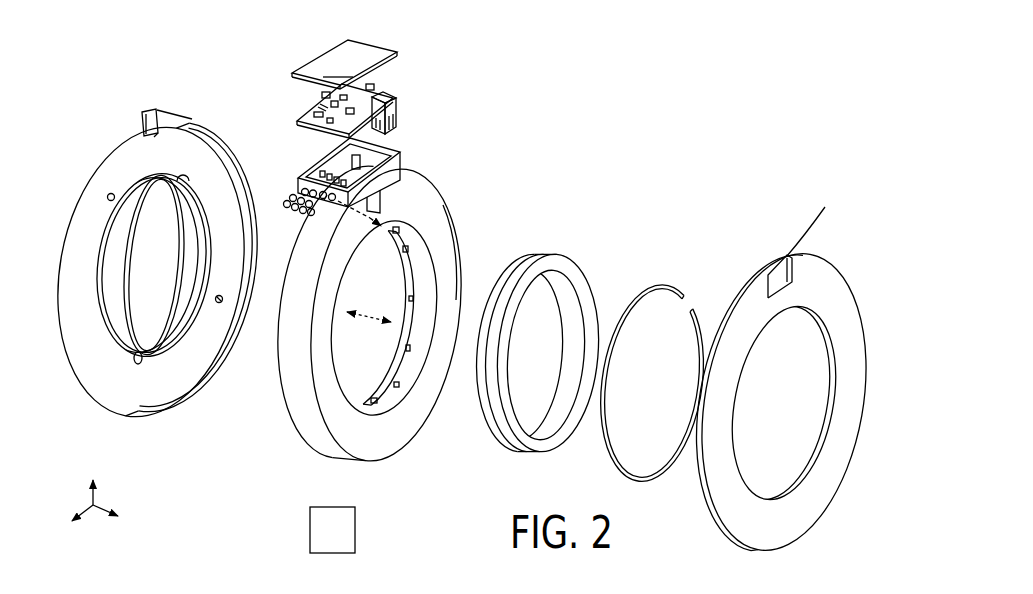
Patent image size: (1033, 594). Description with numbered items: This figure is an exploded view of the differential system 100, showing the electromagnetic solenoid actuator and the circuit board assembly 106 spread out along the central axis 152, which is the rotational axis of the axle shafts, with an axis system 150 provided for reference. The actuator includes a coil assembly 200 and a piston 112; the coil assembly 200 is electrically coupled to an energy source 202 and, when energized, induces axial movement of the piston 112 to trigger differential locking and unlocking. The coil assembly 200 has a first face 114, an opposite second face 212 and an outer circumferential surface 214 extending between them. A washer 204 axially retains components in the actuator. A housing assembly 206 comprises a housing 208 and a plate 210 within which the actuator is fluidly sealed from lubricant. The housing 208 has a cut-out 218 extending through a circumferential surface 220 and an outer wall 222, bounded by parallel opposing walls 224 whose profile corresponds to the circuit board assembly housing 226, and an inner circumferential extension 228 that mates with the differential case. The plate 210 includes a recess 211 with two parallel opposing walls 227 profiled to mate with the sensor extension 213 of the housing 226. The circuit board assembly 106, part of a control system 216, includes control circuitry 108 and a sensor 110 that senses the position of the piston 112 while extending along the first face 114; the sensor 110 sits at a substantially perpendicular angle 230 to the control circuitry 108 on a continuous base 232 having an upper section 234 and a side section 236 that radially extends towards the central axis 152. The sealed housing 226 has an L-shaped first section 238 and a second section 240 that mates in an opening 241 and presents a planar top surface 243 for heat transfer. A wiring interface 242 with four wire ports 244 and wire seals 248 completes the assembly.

The differential system 100 is at (835, 98).
The circuit board assembly 106 is at (470, 78).
The control circuitry 108 is at (283, 115).
The sensor 110 is at (403, 115).
The piston 112 is at (528, 235).
The first face 114 is at (440, 228).
The axis system 150 is at (118, 492).
The central axis 152 is at (370, 320).
The coil assembly 200 is at (480, 198).
The energy source 202 is at (310, 528).
The washer 204 is at (648, 270).
The housing assembly 206 is at (73, 82).
The housing 208 is at (73, 147).
The plate 210 is at (852, 250).
The recess 211 is at (767, 257).
The second face 212 is at (265, 365).
The sensor extension 213 is at (402, 186).
The outer circumferential surface 214 is at (308, 285).
The control system 216 is at (548, 70).
The cut-out 218 is at (130, 120).
The circumferential surface 220 is at (107, 178).
The outer wall 222 is at (163, 139).
The opposing walls 224 is at (154, 137).
The circuit board assembly housing 226 is at (292, 62).
The opposing walls 227 is at (769, 273).
The inner circumferential extension 228 is at (140, 198).
The perpendicular angle 230 is at (370, 218).
The continuous base 232 is at (373, 88).
The upper section 234 is at (328, 103).
The side section 236 is at (393, 103).
The first section 238 is at (400, 165).
The second section 240 is at (340, 44).
The opening 241 is at (315, 163).
The wiring interface 242 is at (295, 190).
The planar top surface 243 is at (338, 66).
The wire ports 244 is at (324, 200).
The wire seals 248 is at (290, 204).